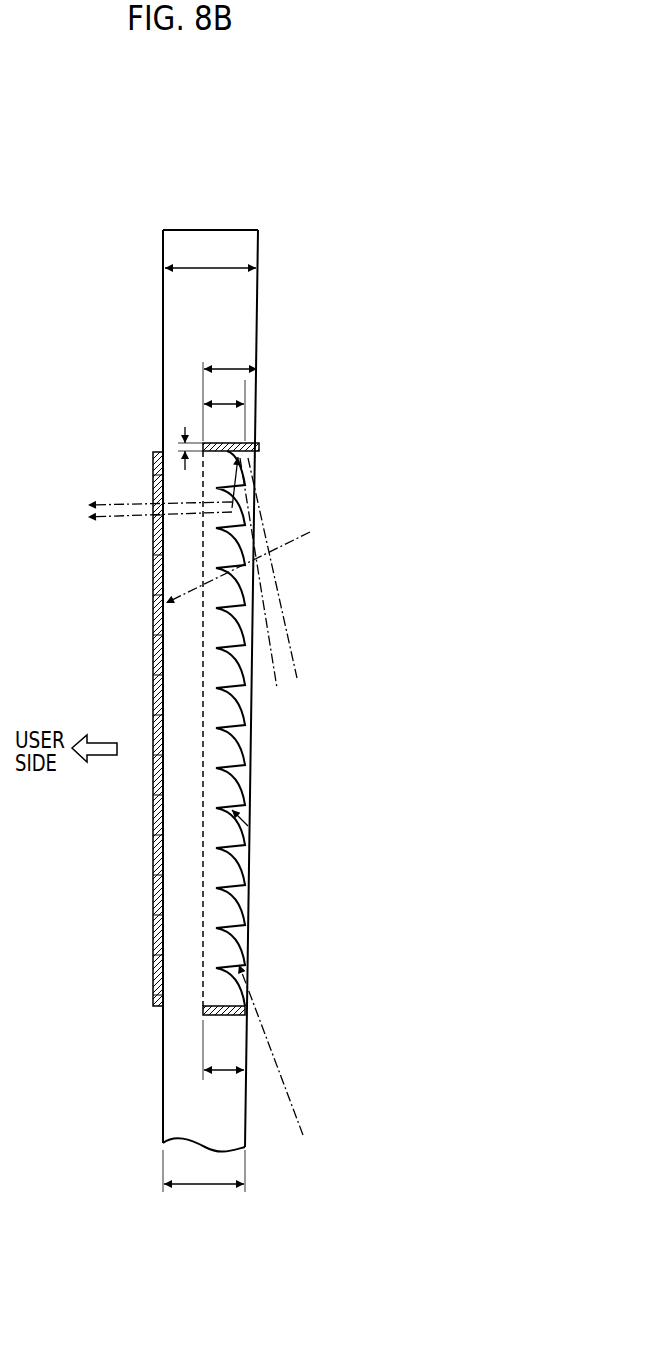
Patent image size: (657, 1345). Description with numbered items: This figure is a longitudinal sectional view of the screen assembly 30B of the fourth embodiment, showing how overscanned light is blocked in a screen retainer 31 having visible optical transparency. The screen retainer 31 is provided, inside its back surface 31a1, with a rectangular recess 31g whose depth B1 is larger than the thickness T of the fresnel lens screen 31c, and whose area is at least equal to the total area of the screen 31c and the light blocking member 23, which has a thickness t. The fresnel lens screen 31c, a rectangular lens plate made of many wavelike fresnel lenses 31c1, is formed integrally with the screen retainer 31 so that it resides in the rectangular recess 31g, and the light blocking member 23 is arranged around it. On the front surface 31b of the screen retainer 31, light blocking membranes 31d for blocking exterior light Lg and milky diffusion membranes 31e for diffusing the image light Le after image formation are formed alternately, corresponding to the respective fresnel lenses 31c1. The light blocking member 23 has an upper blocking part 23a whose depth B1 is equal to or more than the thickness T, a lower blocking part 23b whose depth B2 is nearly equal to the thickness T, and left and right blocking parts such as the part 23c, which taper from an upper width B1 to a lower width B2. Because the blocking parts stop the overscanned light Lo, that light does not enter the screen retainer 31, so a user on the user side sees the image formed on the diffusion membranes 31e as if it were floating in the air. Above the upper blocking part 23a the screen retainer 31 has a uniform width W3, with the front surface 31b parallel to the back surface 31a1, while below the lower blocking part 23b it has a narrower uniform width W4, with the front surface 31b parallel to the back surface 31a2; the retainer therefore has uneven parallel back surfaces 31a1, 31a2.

The screen assembly 30B is at (210, 169).
The screen retainer 31 is at (166, 229).
The front surface 31b is at (163, 296).
The back surface 31a1 is at (259, 291).
The back surface 31a2 is at (246, 1118).
The rectangular recess 31g is at (223, 441).
The milky diffusion membrane 31e is at (153, 506).
The light blocking membrane 31d is at (153, 605).
The fresnel lens screen 31c is at (248, 826).
The fresnel lens 31c1 is at (240, 783).
The light blocking member 23 is at (266, 498).
The upper blocking part 23a is at (259, 447).
The lower blocking part 23b is at (203, 1018).
The left blocking part 23c is at (243, 702).
The uniform width W3 is at (210, 253).
The uniform width W4 is at (204, 1171).
The depth B1 is at (230, 391).
The depth B2 is at (223, 1050).
The thickness T is at (224, 408).
The thickness t is at (178, 447).
The exterior light Lg is at (295, 545).
The overscanned light Lo is at (294, 542).
The image light Le is at (272, 684).